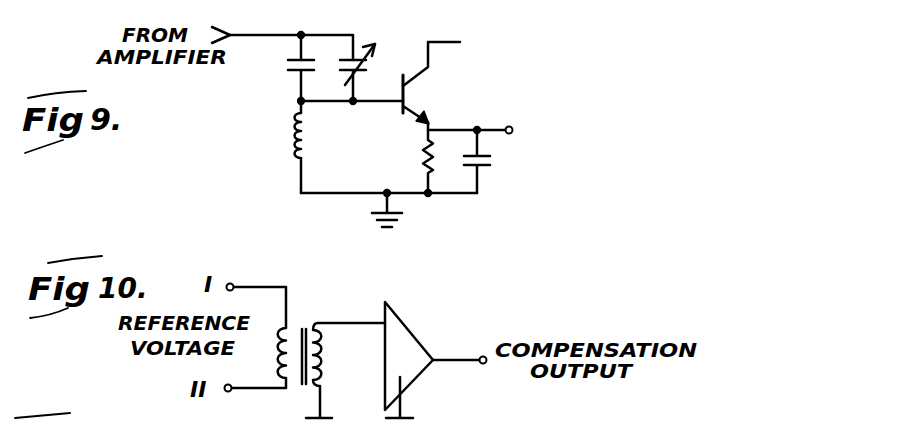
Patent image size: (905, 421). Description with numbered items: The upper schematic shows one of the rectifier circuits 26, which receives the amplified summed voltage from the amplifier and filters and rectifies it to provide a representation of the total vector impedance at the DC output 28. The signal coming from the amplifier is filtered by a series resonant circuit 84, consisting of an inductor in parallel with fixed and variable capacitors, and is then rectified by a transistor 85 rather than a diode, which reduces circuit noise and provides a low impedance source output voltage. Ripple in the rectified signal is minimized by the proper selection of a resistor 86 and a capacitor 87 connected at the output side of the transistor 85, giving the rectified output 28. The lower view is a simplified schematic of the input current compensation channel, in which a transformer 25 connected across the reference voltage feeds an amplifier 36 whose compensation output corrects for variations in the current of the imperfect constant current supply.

In FIG. 9, the series resonant circuit 84 is at (268, 141).
In FIG. 9, the transistor 85 is at (417, 72).
In FIG. 9, the resistor 86 is at (425, 152).
In FIG. 9, the capacitor 87 is at (490, 160).
In FIG. 9, the DC output 28 is at (509, 125).
In FIG. 9, the rectifier circuit 26 is at (357, 174).
In FIG. 10, the transformer 25 is at (292, 402).
In FIG. 10, the amplifier 36 is at (413, 330).